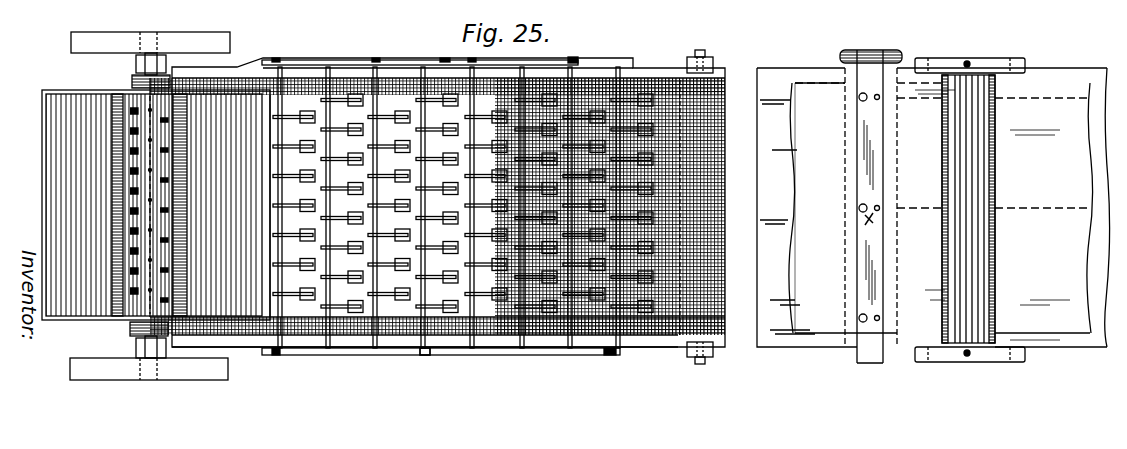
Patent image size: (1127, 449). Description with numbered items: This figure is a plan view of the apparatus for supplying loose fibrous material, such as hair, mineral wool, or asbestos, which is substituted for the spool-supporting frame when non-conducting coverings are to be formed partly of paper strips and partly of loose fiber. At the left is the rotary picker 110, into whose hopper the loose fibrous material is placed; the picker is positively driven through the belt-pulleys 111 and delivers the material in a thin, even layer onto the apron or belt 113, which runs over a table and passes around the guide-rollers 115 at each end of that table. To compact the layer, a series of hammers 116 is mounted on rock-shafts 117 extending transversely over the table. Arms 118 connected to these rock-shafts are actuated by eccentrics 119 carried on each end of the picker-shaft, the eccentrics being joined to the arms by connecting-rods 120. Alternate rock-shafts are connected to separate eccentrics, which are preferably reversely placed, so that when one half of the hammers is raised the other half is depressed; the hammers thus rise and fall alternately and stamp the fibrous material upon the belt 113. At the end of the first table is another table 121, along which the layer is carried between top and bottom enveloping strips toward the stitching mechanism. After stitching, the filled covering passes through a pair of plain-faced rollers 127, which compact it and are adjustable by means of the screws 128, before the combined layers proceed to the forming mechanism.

The rotary picker 110 is at (145, 150).
The belt-pulleys 111 is at (150, 206).
The apron or belt 113 is at (663, 95).
The guide-rollers 115 is at (718, 72).
The hammers 116 is at (313, 300).
The rock-shafts 117 is at (373, 312).
The arms 118 is at (350, 60).
The eccentrics 119 is at (133, 80).
The connecting-rods 120 is at (446, 58).
The table 121 is at (915, 215).
The plain-faced rollers 127 is at (975, 175).
The screws 128 is at (970, 63).